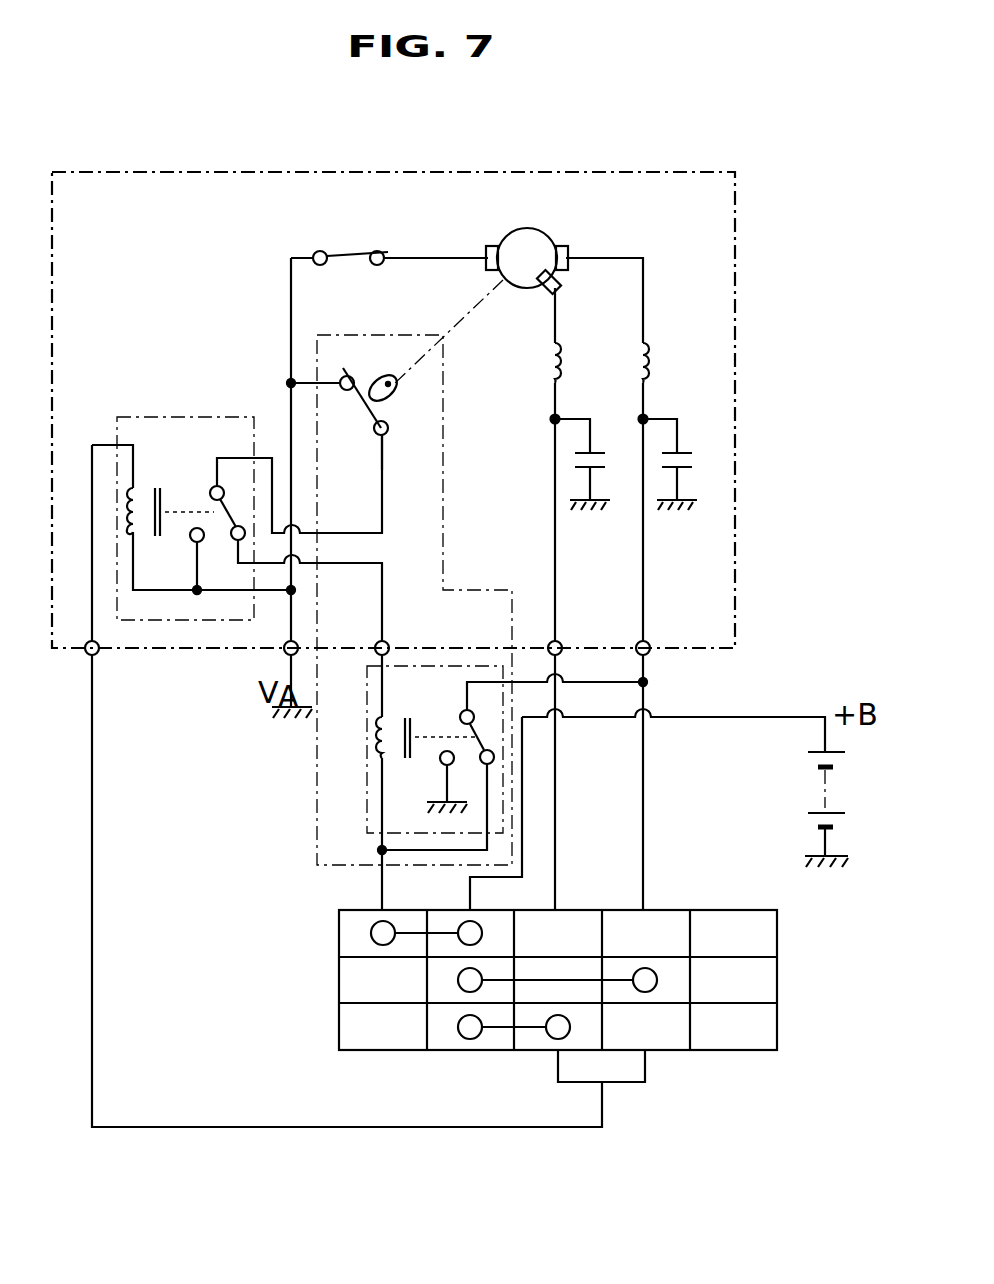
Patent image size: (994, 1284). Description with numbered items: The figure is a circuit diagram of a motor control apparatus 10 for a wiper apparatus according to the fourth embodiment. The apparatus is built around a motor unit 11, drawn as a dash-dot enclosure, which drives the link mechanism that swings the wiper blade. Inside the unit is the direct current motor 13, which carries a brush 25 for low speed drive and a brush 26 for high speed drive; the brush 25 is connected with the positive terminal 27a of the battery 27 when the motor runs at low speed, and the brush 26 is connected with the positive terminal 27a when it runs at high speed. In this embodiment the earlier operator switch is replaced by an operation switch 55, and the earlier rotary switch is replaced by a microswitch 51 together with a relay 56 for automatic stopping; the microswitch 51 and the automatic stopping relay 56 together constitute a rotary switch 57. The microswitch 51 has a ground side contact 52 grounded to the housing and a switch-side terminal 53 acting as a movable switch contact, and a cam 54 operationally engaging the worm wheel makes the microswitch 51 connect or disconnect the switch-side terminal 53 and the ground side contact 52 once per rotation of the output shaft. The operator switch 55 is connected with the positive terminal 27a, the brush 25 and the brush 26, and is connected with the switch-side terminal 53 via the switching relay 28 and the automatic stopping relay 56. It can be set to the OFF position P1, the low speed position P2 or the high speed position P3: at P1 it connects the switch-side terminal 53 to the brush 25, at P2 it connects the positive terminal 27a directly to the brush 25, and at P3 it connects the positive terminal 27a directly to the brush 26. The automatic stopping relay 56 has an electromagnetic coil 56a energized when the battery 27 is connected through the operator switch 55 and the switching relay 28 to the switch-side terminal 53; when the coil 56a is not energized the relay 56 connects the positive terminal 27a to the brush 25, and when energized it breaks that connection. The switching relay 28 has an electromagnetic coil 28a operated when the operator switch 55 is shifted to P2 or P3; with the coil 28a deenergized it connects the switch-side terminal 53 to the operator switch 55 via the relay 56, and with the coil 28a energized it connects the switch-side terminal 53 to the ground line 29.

The motor control apparatus 10 is at (830, 137).
The motor unit 11 is at (735, 258).
The direct current motor 13 is at (506, 236).
The brush for low speed drive 25 is at (566, 240).
The brush for high speed drive 26 is at (559, 283).
The battery 27 is at (797, 794).
The positive terminal 27a is at (808, 752).
The switching relay 28 is at (143, 417).
The electromagnetic coil 28a is at (146, 492).
The ground line 29 is at (291, 625).
The microswitch 51 is at (380, 446).
The ground side contact 52 is at (346, 398).
The switch-side terminal 53 is at (388, 436).
The cam 54 is at (399, 396).
The operator switch 55 is at (709, 1064).
The automatic stopping relay 56 is at (371, 752).
The electromagnetic coil 56a is at (390, 716).
The rotary switch 57 is at (343, 334).
The OFF position P1 is at (777, 933).
The low speed position P2 is at (777, 980).
The high speed position P3 is at (777, 1026).